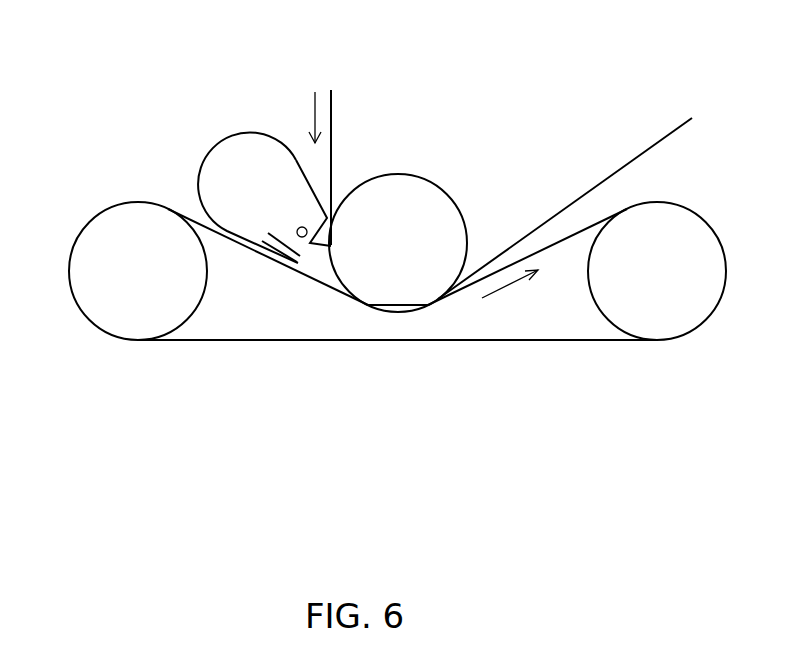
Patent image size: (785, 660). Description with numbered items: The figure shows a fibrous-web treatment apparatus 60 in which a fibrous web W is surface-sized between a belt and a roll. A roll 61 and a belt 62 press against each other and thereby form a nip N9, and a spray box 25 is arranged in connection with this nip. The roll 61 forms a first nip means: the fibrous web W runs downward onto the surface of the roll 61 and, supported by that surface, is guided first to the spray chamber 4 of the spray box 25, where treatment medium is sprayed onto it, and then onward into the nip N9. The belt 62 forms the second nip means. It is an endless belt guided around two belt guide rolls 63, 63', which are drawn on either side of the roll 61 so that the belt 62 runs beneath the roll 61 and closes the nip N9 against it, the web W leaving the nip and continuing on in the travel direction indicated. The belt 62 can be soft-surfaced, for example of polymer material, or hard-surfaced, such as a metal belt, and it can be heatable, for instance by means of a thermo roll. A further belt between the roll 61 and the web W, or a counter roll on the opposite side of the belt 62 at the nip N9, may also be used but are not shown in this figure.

The fibrous-web treatment apparatus 60 is at (500, 99).
The spray box 25 is at (222, 153).
The spray chamber 4 is at (315, 264).
The fibrous web W is at (332, 122).
The roll 61 is at (438, 205).
The belt 62 is at (207, 341).
The belt guide roll 63 is at (114, 271).
The belt guide roll 63' is at (673, 253).
The nip N9 is at (326, 299).